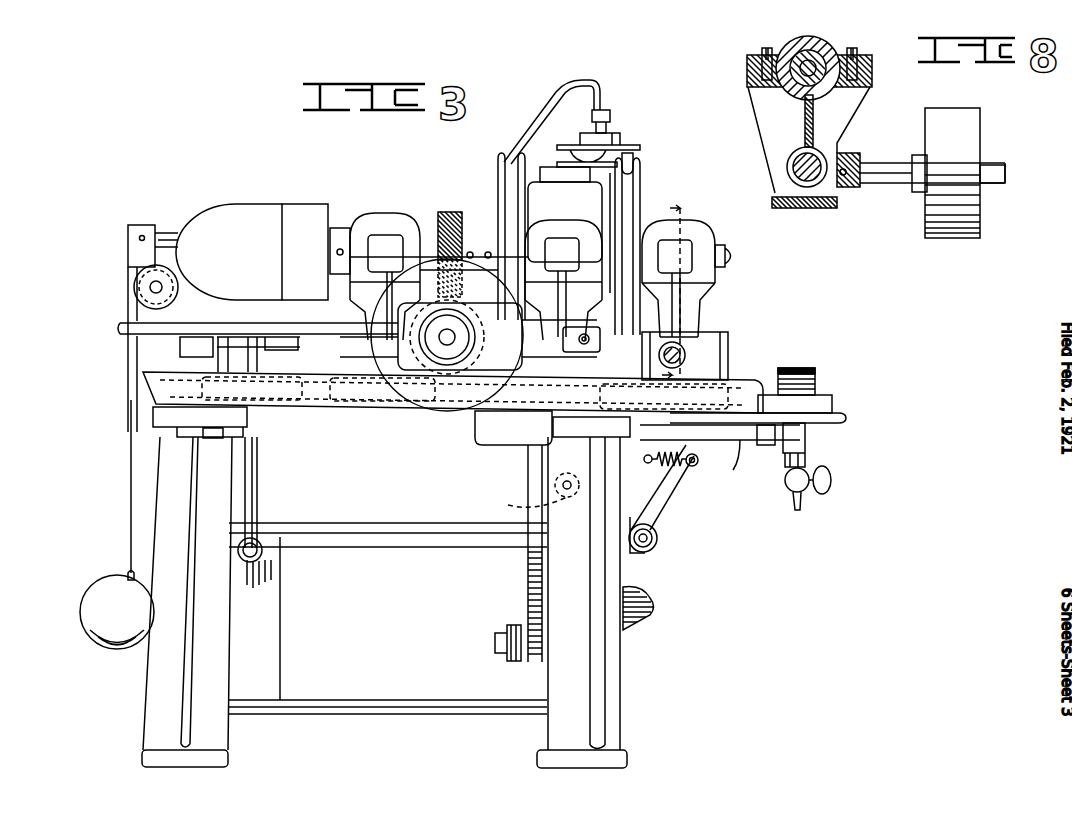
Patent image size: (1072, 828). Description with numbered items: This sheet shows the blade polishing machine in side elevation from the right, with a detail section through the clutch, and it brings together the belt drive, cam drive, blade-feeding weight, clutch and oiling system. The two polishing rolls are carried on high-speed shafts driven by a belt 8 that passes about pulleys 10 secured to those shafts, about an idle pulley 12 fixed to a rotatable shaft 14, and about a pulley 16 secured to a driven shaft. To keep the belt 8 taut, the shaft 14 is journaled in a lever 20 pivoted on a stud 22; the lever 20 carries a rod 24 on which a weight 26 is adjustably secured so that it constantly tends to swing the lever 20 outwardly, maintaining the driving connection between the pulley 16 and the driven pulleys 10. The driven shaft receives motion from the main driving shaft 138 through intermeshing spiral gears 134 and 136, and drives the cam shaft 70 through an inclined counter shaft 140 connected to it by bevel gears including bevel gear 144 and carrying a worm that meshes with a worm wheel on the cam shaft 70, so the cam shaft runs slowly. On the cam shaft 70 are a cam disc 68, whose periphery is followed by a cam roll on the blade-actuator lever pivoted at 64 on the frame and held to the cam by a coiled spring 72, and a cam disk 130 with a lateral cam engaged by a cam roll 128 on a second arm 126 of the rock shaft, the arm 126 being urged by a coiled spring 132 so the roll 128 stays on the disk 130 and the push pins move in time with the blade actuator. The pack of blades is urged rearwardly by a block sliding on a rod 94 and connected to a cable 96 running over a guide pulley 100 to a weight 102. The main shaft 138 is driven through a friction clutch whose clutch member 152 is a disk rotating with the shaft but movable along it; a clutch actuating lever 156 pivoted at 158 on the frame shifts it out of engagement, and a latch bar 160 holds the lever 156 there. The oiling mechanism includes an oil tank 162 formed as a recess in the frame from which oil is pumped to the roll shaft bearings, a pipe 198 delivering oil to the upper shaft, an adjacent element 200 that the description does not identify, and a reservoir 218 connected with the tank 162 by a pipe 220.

In FIG. 3, the belt 8 is at (679, 285).
In FIG. 3, the pulleys 10 is at (621, 143).
In FIG. 3, the idle pulley 12 is at (640, 187).
In FIG. 3, the rotatable shaft 14 is at (733, 260).
In FIG. 8, the rotatable shaft 14 is at (815, 52).
In FIG. 3, the pulley 16 is at (500, 180).
In FIG. 3, the lever 20 is at (714, 302).
In FIG. 8, the lever 20 is at (845, 110).
In FIG. 8, the stud 22 is at (798, 207).
In FIG. 3, the rod 24 is at (682, 355).
In FIG. 8, the rod 24 is at (878, 180).
In FIG. 8, the weight 26 is at (980, 217).
In FIG. 3, the pivot 64 is at (495, 638).
In FIG. 3, the cam disc 68 is at (526, 572).
In FIG. 3, the cam shaft 70 is at (440, 523).
In FIG. 3, the coiled spring 72 is at (533, 490).
In FIG. 3, the rod 94 is at (175, 232).
In FIG. 3, the cable 96 is at (132, 353).
In FIG. 3, the guide pulley 100 is at (133, 283).
In FIG. 3, the weight 102 is at (110, 578).
In FIG. 3, the second arm 126 is at (656, 510).
In FIG. 3, the cam roll 128 is at (658, 545).
In FIG. 3, the cam disk 130 is at (644, 594).
In FIG. 3, the coiled spring 132 is at (664, 469).
In FIG. 3, the spiral gear 134 is at (448, 212).
In FIG. 3, the spiral gear 136 is at (440, 423).
In FIG. 3, the main driving shaft 138 is at (447, 337).
In FIG. 3, the inclined counter shaft 140 is at (258, 453).
In FIG. 3, the bevel gear 144 is at (342, 230).
In FIG. 3, the clutch member 152 is at (460, 412).
In FIG. 3, the clutch actuating lever 156 is at (117, 328).
In FIG. 3, the pivot 158 is at (577, 318).
In FIG. 3, the latch bar 160 is at (182, 356).
In FIG. 3, the oil tank 162 is at (516, 445).
In FIG. 3, the pipe 198 is at (562, 87).
In FIG. 3, the fitting 200 is at (613, 124).
In FIG. 3, the reservoir 218 is at (832, 402).
In FIG. 3, the pipe 220 is at (722, 427).